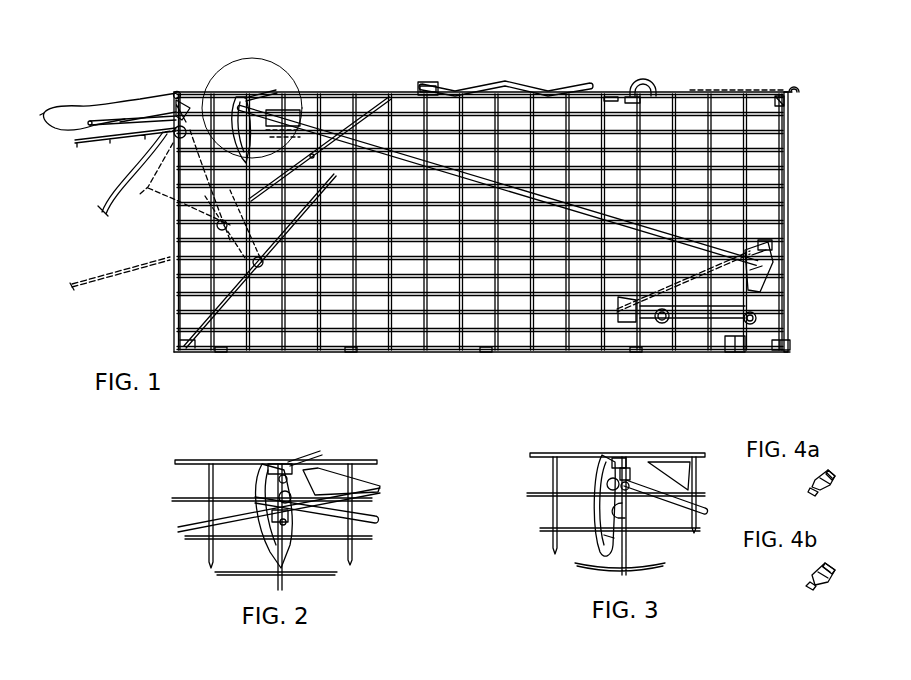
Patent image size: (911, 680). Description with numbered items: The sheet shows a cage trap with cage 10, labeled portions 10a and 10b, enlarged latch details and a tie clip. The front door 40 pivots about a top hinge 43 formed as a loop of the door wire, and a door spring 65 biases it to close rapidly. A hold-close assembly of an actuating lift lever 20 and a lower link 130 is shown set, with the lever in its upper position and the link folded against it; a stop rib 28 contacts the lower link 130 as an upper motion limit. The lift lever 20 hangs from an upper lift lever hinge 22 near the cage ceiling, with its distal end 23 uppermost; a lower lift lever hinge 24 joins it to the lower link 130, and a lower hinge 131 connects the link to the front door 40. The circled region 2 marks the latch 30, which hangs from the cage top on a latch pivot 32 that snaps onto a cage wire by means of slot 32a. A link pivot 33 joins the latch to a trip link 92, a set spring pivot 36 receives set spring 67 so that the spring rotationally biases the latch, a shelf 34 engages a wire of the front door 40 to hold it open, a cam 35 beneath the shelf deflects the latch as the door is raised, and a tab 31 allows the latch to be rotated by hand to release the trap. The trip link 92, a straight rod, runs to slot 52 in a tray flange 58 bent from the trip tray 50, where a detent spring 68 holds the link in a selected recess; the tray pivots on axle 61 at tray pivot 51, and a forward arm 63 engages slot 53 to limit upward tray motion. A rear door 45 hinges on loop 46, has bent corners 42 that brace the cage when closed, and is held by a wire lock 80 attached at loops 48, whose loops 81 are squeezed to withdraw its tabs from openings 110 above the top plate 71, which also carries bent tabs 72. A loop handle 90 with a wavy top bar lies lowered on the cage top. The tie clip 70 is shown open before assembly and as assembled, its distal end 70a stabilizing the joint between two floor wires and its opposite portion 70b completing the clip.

In FIG. 1, the detail circle for FIG. 2 is at (252, 85).
In FIG. 1, the cage 10 is at (720, 100).
In FIG. 1, the left side rail 10a is at (180, 290).
In FIG. 1, the right side rail 10b is at (786, 176).
In FIG. 1, the actuating lift lever 20 is at (78, 108).
In FIG. 1, the upper lift lever hinge 22 is at (175, 92).
In FIG. 1, the distal end 23 is at (47, 108).
In FIG. 1, the lower lift lever hinge 24 is at (86, 124).
In FIG. 1, the stop rib 28 is at (172, 110).
In FIG. 1, the latch 30 is at (238, 98).
In FIG. 2, the latch 30 is at (262, 465).
In FIG. 3, the latch 30 is at (602, 460).
In FIG. 2, the tab 31 is at (322, 453).
In FIG. 3, the tab 31 is at (668, 455).
In FIG. 2, the latch pivot 32 is at (283, 474).
In FIG. 3, the latch pivot 32 is at (626, 466).
In FIG. 2, the slot 32a is at (270, 462).
In FIG. 3, the slot 32a is at (616, 456).
In FIG. 2, the link pivot 33 is at (278, 492).
In FIG. 3, the link pivot 33 is at (606, 483).
In FIG. 2, the shelf 34 is at (275, 520).
In FIG. 3, the shelf 34 is at (626, 509).
In FIG. 2, the cam 35 is at (290, 512).
In FIG. 3, the cam 35 is at (614, 538).
In FIG. 2, the set spring pivot 36 is at (292, 470).
In FIG. 1, the front door 40 is at (86, 146).
In FIG. 1, the bent corners 42 is at (781, 92).
In FIG. 1, the top hinge 43 is at (389, 97).
In FIG. 1, the rear door 45 is at (789, 150).
In FIG. 1, the loop 46 is at (791, 343).
In FIG. 1, the loops 48 is at (799, 89).
In FIG. 1, the trip tray 50 is at (648, 322).
In FIG. 1, the tray pivot 51 is at (750, 326).
In FIG. 1, the slot 52 is at (774, 262).
In FIG. 1, the slot 53 is at (668, 320).
In FIG. 1, the tray flange 58 is at (762, 286).
In FIG. 1, the axle 61 is at (763, 350).
In FIG. 1, the forward arm 63 is at (691, 337).
In FIG. 1, the door spring 65 is at (292, 112).
In FIG. 2, the door spring 65 is at (232, 492).
In FIG. 1, the set spring 67 is at (272, 94).
In FIG. 2, the set spring 67 is at (340, 461).
In FIG. 3, the set spring 67 is at (678, 455).
In FIG. 1, the detent spring 68 is at (772, 252).
In FIG. 1, the tie clip 70 is at (492, 353).
In FIG. 4a, the tie clip 70 is at (812, 483).
In FIG. 4b, the tie clip 70 is at (812, 574).
In FIG. 4a, the distal end 70a is at (810, 491).
In FIG. 4b, the distal end 70a is at (810, 584).
In FIG. 4a, the clip jaw 70b is at (836, 479).
In FIG. 4b, the clip jaw 70b is at (836, 572).
In FIG. 1, the top plate 71 is at (610, 96).
In FIG. 1, the bent tabs 72 is at (505, 84).
In FIG. 1, the lock 80 is at (745, 91).
In FIG. 1, the loops 81 is at (656, 84).
In FIG. 1, the handle 90 is at (425, 84).
In FIG. 1, the trip link 92 is at (658, 234).
In FIG. 1, the openings 110 is at (630, 97).
In FIG. 1, the lower link 130 is at (126, 120).
In FIG. 1, the lower hinge 131 is at (264, 266).